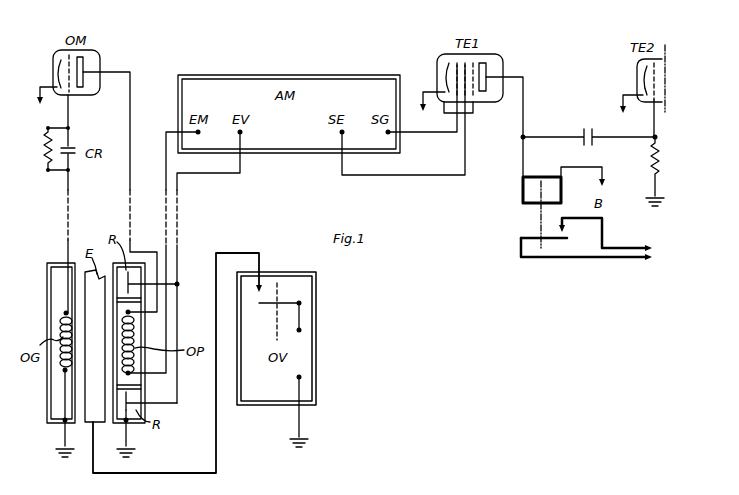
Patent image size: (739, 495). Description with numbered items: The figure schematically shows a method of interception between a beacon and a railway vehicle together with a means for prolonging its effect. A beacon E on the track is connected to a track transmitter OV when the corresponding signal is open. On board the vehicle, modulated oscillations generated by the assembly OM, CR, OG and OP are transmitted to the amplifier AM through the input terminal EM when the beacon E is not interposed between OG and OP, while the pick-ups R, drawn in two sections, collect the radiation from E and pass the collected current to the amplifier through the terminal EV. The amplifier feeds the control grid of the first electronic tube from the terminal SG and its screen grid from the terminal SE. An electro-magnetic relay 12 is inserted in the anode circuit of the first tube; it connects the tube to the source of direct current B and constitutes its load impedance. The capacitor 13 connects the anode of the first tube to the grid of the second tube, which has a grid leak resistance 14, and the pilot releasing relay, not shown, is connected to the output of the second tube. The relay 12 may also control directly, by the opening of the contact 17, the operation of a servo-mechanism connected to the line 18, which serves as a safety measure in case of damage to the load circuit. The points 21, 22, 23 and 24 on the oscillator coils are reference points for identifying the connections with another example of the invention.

The electro-magnetic relay 12 is at (542, 204).
The capacitor 13 is at (589, 127).
The grid leak resistance 14 is at (661, 171).
The contact 17 is at (586, 234).
The line 18 is at (598, 253).
The reference point 21 is at (64, 312).
The reference point 22 is at (64, 371).
The reference point 23 is at (135, 325).
The reference point 24 is at (134, 379).